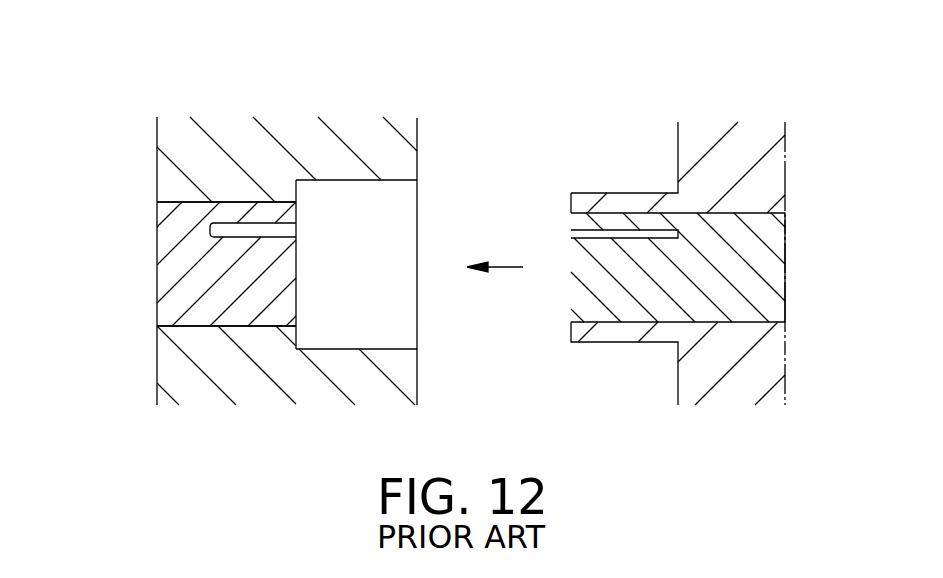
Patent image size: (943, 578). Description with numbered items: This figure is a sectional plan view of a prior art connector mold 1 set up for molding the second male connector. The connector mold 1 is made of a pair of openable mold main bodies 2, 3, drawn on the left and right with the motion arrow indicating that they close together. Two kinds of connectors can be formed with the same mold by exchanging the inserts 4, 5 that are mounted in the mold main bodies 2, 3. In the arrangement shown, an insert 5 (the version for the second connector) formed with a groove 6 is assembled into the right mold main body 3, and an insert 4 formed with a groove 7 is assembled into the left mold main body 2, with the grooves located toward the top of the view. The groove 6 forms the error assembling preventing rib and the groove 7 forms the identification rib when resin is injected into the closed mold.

The connector mold 1 is at (497, 30).
The mold main body 2 is at (173, 171).
The mold main body 3 is at (780, 174).
The insert 4 is at (168, 259).
The insert 5 is at (786, 246).
The groove 6 is at (618, 236).
The groove 7 is at (265, 228).